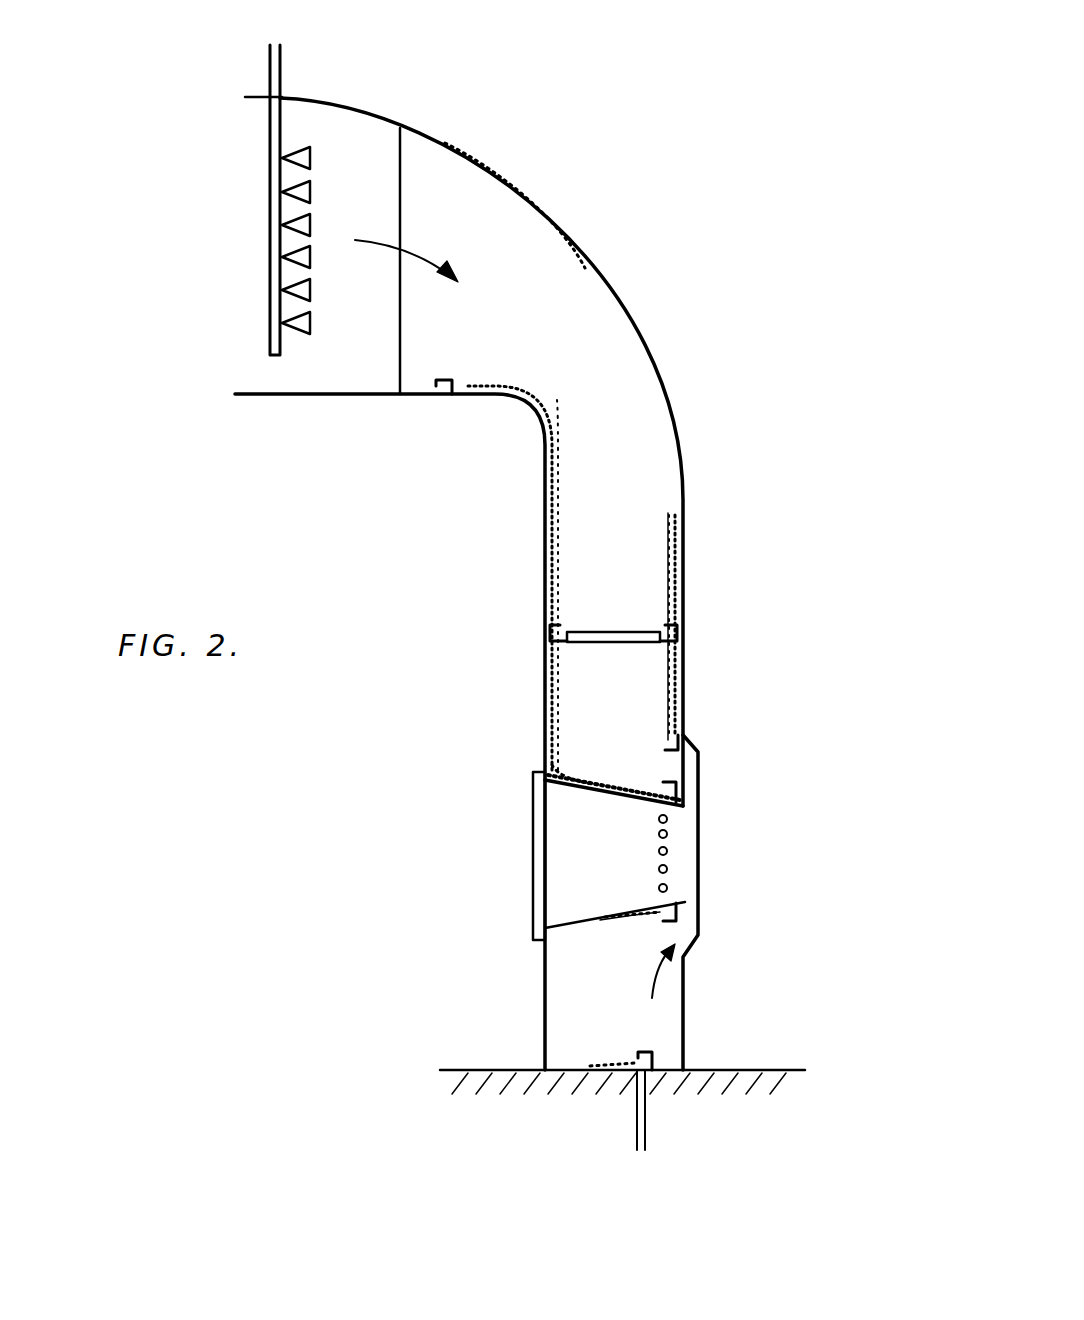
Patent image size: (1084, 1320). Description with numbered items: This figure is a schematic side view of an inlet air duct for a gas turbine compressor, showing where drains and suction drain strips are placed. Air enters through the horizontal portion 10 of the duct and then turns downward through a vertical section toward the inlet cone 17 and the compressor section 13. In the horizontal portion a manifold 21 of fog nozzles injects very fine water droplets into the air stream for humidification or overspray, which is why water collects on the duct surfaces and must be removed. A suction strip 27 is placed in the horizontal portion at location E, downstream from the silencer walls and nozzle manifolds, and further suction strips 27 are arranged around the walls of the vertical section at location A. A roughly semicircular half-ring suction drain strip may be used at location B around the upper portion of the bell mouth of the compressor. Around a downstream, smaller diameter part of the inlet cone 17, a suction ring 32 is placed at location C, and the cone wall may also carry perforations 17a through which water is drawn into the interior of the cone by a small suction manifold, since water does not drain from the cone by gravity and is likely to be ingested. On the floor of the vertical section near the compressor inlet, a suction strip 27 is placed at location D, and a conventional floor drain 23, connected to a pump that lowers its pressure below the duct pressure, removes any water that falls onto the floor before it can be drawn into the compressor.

The manifold of fog nozzles 21 is at (268, 130).
The suction strip 27 is at (452, 396).
The location E is at (452, 378).
The location A is at (685, 640).
The location B is at (685, 740).
The location C is at (698, 920).
The location D is at (650, 1073).
The horizontal portion 10 is at (700, 775).
The compressor section 13 is at (813, 893).
The inlet cone 17 is at (560, 895).
The perforations 17a is at (658, 869).
The suction ring 32 is at (662, 925).
The floor drain 23 is at (637, 1120).